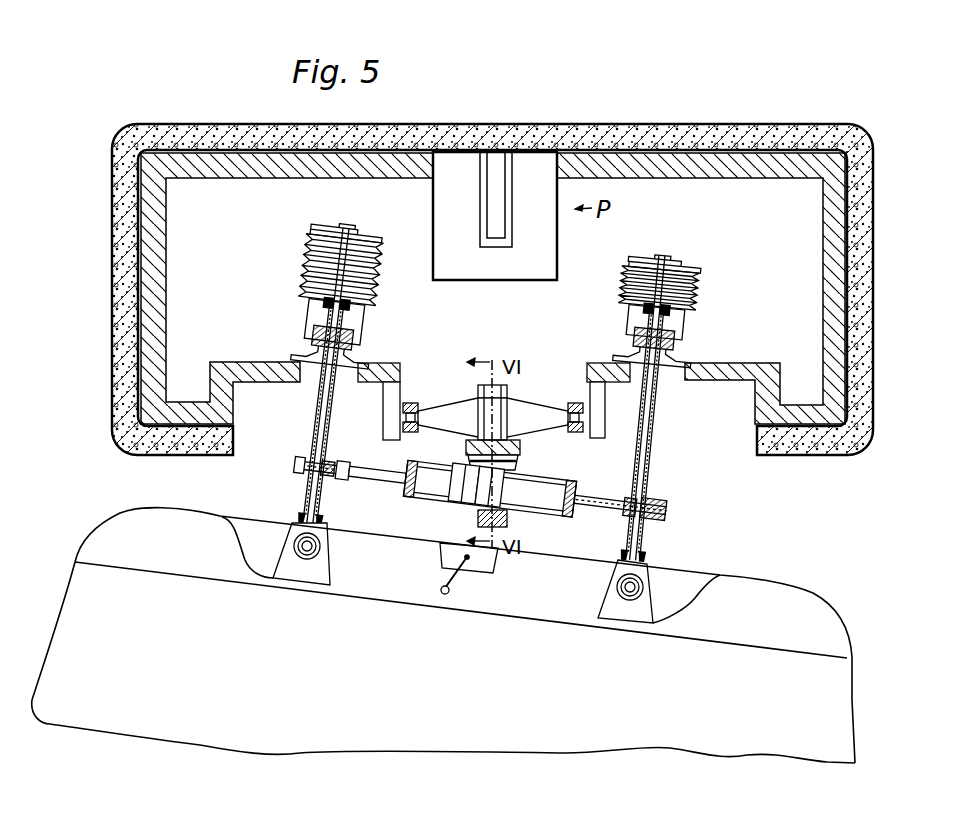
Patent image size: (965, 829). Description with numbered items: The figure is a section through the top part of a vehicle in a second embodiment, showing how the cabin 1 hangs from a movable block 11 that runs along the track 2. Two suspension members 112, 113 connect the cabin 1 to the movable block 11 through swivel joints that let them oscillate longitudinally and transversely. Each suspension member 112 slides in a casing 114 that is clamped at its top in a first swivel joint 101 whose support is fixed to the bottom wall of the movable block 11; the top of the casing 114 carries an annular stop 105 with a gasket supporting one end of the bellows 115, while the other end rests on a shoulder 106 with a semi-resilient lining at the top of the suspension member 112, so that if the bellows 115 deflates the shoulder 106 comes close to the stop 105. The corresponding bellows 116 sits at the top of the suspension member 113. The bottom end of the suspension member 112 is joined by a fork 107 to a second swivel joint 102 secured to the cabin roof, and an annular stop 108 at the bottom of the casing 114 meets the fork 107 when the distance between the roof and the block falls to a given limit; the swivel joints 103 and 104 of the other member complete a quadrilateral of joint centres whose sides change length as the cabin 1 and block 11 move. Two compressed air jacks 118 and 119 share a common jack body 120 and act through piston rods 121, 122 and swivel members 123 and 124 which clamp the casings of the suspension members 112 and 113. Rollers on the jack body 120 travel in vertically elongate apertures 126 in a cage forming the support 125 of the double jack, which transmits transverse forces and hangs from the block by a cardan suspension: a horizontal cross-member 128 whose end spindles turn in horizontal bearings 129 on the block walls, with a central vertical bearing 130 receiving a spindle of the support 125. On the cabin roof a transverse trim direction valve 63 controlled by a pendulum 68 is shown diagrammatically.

The cabin 1 is at (93, 532).
The track 2 is at (891, 217).
The movable block 11 is at (700, 162).
The transverse trim direction valve 63 is at (500, 563).
The pendulum 68 is at (455, 590).
The first swivel joint 101 is at (312, 331).
The second swivel joint 102 is at (287, 549).
The swivel joint 103 is at (682, 344).
The swivel joint 104 is at (618, 587).
The annular stop 105 is at (305, 296).
The shoulder 106 is at (347, 228).
The fork 107 is at (320, 537).
The annular stop 108 is at (322, 520).
The suspension member 112 is at (322, 431).
The suspension member 113 is at (655, 455).
The casing 114 is at (312, 396).
The bellows 115 is at (300, 263).
The bellows 116 is at (700, 288).
The compressed air jack 118 is at (438, 492).
The compressed air jack 119 is at (548, 508).
The jack body 120 is at (560, 482).
The piston rod 121 is at (368, 458).
The piston rod 122 is at (585, 500).
The swivel member 123 is at (292, 464).
The swivel member 124 is at (668, 505).
The support 125 is at (466, 438).
The aperture 126 is at (512, 470).
The horizontal cross-member 128 is at (535, 410).
The horizontal bearing 129 is at (408, 410).
The vertical bearing 130 is at (480, 392).